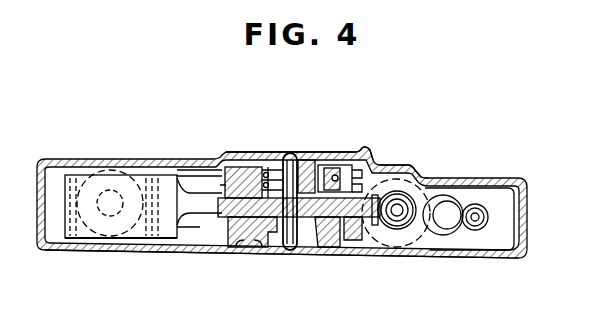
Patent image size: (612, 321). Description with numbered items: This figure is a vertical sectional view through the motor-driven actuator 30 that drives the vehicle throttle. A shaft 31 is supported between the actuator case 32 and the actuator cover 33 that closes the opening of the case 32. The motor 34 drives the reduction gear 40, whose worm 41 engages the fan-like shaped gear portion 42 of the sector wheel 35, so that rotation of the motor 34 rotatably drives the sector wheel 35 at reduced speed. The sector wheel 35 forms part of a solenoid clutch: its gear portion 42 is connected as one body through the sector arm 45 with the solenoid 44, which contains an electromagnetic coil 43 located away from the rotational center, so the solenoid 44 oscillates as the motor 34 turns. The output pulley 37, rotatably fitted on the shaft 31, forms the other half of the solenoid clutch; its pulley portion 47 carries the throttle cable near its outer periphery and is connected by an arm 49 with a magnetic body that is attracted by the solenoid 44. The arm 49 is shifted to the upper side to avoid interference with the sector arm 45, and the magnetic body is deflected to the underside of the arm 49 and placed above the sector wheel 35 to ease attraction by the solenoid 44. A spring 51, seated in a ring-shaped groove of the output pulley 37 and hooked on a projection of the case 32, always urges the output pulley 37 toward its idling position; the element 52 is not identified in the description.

The actuator 30 is at (253, 234).
The shaft 31 is at (290, 156).
The actuator case 32 is at (378, 166).
The actuator cover 33 is at (217, 252).
The motor 34 is at (508, 210).
The sector wheel 35 is at (328, 225).
The output pulley 37 is at (232, 155).
The reduction gear 40 is at (426, 245).
The worm 41 is at (418, 181).
The gear portion 42 is at (390, 228).
The electromagnetic coil 43 is at (88, 228).
The solenoid 44 is at (134, 233).
The sector arm 45 is at (188, 213).
The pulley portion 47 is at (363, 162).
The arm 49 is at (190, 180).
The spring 51 is at (275, 165).
The block 52 is at (312, 160).